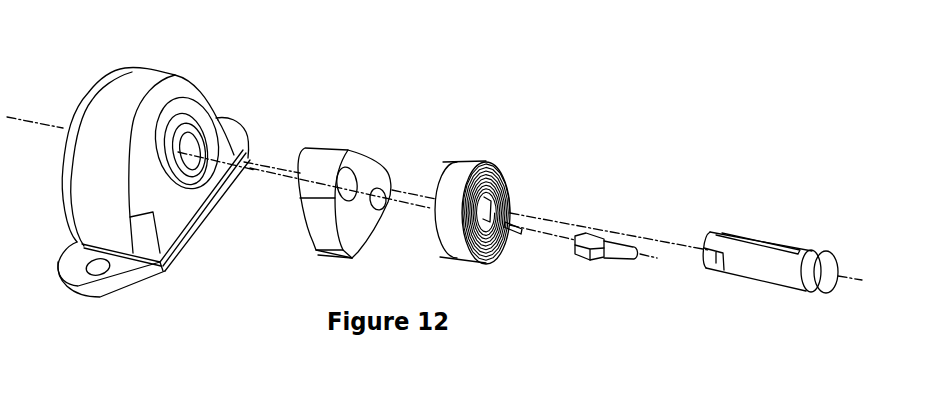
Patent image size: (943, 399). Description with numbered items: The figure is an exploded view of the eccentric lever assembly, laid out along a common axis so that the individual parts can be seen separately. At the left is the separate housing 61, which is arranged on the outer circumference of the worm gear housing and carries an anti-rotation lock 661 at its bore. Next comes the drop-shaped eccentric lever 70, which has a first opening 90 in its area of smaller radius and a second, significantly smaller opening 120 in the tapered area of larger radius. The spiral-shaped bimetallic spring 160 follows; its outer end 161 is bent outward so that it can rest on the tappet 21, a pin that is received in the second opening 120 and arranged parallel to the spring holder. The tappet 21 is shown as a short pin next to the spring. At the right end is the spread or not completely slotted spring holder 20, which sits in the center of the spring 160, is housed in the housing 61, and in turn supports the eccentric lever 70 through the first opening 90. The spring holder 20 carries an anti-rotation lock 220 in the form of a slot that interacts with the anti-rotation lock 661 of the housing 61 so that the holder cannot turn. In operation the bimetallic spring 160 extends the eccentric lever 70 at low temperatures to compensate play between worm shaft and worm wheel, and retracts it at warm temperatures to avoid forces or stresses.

The housing 61 is at (120, 130).
The anti-rotation lock 661 is at (188, 143).
The eccentric lever 70 is at (322, 165).
The first opening 90 is at (350, 172).
The second opening 120 is at (380, 190).
The bimetallic spring 160 is at (463, 175).
The outer end of torsion spring 161 is at (523, 234).
The tappet 21 is at (617, 247).
The spring holder 20 is at (778, 268).
The anti-rotation lock 220 is at (715, 262).